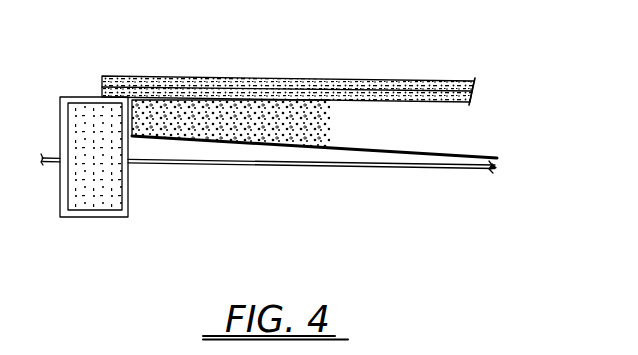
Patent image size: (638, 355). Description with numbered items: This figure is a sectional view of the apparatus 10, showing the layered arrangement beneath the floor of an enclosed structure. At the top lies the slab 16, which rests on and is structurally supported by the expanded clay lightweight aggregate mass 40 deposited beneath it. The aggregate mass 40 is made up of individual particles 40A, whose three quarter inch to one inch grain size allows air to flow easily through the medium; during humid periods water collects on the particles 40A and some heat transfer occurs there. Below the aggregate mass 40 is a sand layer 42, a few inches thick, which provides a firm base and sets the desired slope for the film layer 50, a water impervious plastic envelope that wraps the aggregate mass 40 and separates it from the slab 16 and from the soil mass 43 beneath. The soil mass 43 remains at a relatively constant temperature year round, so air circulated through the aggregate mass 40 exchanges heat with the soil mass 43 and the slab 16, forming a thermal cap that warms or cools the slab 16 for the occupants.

The apparatus 10 is at (226, 62).
The slab 16 is at (305, 78).
The aggregate mass 40 is at (456, 135).
The individual particles 40A is at (330, 118).
The sand layer 42 is at (247, 150).
The soil mass 43 is at (186, 208).
The film layer 50 is at (353, 149).